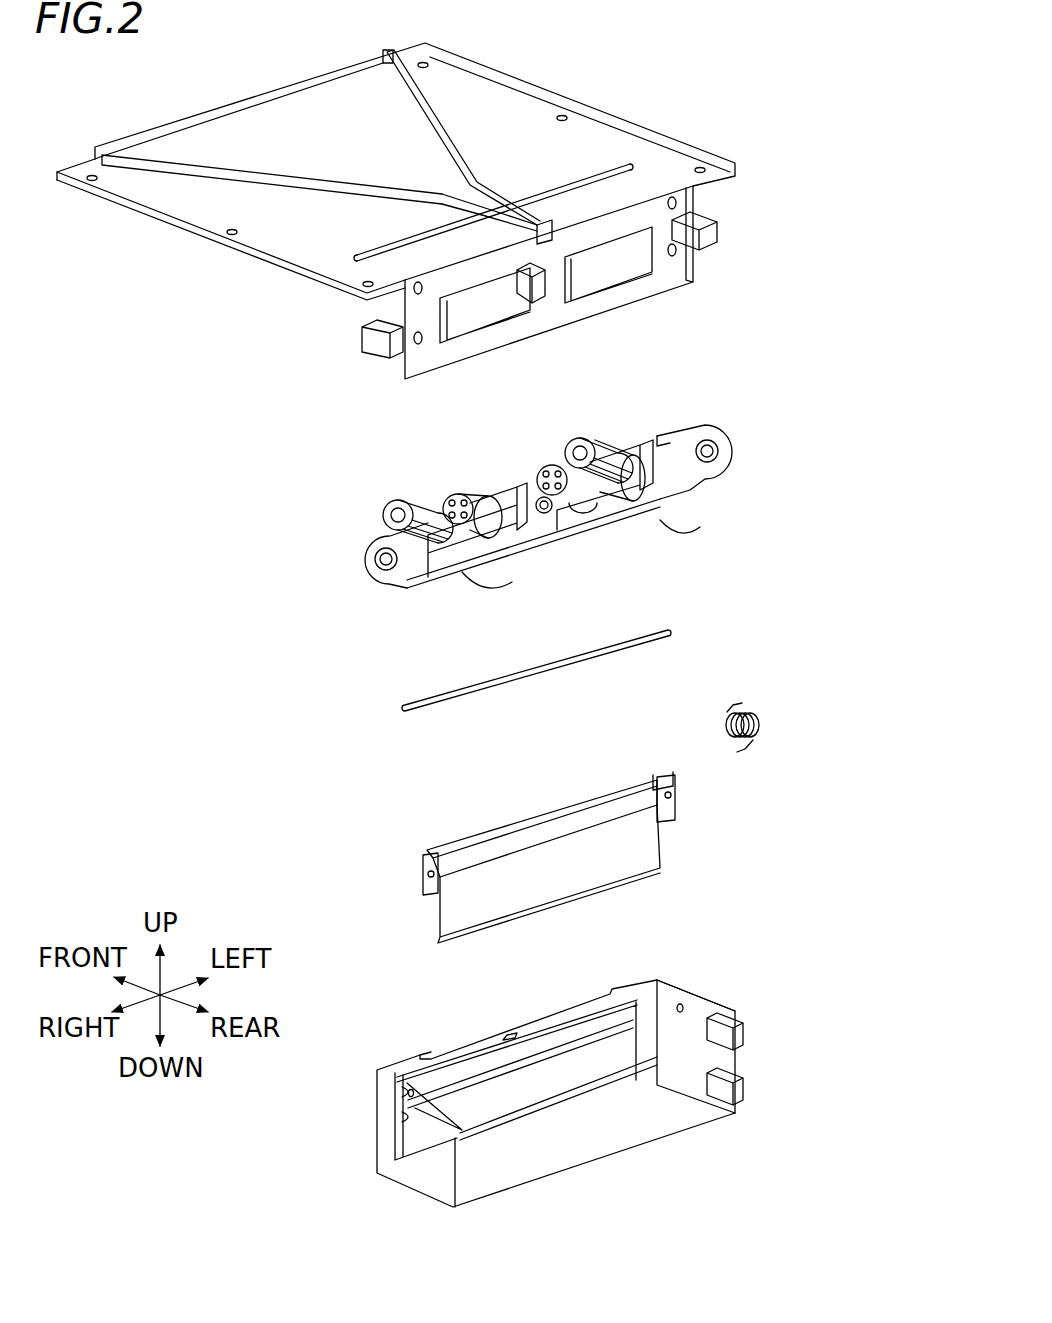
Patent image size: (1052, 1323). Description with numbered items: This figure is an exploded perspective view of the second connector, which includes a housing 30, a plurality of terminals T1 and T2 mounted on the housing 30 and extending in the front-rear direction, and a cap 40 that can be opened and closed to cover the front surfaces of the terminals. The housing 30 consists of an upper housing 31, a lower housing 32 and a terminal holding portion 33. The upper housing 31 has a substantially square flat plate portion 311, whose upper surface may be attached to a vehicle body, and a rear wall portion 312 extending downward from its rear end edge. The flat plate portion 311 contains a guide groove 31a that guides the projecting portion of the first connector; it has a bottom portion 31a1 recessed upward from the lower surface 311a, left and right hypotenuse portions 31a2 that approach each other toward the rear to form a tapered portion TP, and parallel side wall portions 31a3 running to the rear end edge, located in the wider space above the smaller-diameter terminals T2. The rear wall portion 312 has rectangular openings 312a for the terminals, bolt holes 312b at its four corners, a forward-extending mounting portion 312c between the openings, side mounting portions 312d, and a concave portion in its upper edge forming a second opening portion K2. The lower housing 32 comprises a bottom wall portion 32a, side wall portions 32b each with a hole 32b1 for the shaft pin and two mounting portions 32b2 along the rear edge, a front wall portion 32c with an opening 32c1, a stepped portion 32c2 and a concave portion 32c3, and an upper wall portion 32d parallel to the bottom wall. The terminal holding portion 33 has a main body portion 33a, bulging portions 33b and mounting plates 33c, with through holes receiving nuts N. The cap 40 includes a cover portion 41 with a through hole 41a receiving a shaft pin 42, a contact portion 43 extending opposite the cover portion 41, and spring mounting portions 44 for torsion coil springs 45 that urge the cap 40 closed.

The housing 30 is at (106, 494).
The upper housing 31 is at (436, 231).
The guide groove 31a is at (430, 150).
The bottom portion 31a1 is at (288, 120).
The hypotenuse portions 31a2 is at (405, 100).
The side wall portions 31a3 is at (545, 222).
The flat plate portion 311 is at (706, 155).
The lower surface 311a is at (618, 142).
The rear wall portion 312 is at (547, 303).
The openings 312a is at (612, 283).
The holes 312b is at (676, 204).
The mounting portion 312c is at (543, 286).
The mounting portions 312d is at (710, 230).
The tapered portion TP is at (178, 180).
The second opening portion K2 is at (545, 250).
The terminal holding portion 33 is at (542, 514).
The main body portion 33a is at (632, 440).
The bulging portions 33b is at (705, 470).
The mounting plates 33c is at (605, 500).
The nuts N is at (716, 449).
The terminals T1 is at (668, 538).
The terminals T2 is at (536, 482).
The cap 40 is at (382, 682).
The cover portion 41 is at (568, 842).
The through hole 41a is at (662, 780).
The shaft pin 42 is at (655, 640).
The contact portion 43 is at (470, 848).
The spring mounting portions 44 is at (680, 805).
The torsion coil spring 45 is at (748, 713).
The lower housing 32 is at (559, 1089).
The bottom wall portion 32a is at (597, 1143).
The side wall portions 32b is at (702, 1012).
The hole 32b1 is at (685, 1004).
The mounting portions 32b2 is at (745, 1031).
The front wall portion 32c is at (383, 1158).
The opening 32c1 is at (405, 1117).
The stepped portion 32c2 is at (428, 1055).
The concave portion 32c3 is at (510, 1034).
The upper wall portion 32d is at (583, 1045).